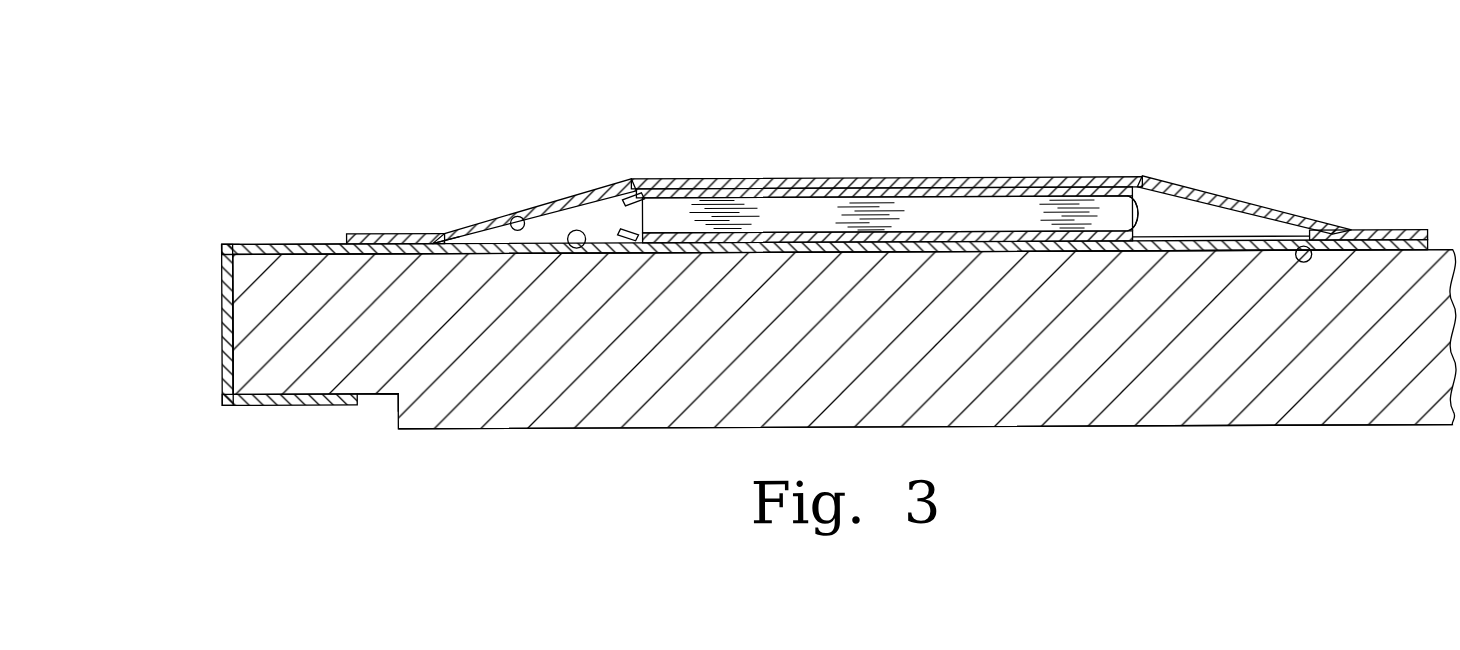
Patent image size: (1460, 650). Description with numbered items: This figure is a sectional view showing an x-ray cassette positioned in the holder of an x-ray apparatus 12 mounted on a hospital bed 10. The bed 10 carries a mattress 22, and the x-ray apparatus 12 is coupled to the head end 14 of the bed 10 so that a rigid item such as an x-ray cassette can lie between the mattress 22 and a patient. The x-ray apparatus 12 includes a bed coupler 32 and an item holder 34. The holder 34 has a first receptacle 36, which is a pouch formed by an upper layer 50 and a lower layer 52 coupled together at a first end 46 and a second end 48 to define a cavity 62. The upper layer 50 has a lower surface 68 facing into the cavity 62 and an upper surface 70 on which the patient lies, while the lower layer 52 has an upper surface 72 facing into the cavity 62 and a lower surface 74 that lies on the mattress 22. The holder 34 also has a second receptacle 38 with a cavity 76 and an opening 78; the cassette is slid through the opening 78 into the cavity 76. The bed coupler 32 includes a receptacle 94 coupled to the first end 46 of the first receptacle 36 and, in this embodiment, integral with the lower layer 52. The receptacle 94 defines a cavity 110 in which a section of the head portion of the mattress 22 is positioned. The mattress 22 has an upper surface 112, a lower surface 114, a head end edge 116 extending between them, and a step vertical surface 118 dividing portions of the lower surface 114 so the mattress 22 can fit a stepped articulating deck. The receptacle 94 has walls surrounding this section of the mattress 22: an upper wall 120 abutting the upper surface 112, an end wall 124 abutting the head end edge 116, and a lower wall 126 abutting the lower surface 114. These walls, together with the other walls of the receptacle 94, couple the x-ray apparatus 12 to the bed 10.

The hospital bed 10 is at (1148, 485).
The x-ray apparatus 12 is at (1063, 117).
The head end 14 is at (250, 306).
The mattress 22 is at (650, 429).
The bed coupler 32 is at (262, 241).
The item holder 34 is at (727, 165).
The first receptacle 36 is at (1157, 177).
The second receptacle 38 is at (1147, 214).
The first end 46 is at (360, 231).
The second end 48 is at (1408, 231).
The upper layer 50 is at (580, 196).
The lower layer 52 is at (456, 240).
The cavity 62 is at (1243, 232).
The lower surface 68 is at (518, 214).
The upper surface 70 is at (906, 177).
The upper surface 72 is at (578, 250).
The lower surface 74 is at (1306, 248).
The cavity 76 is at (781, 222).
The opening 78 is at (648, 214).
The receptacle 94 is at (243, 241).
The cavity 110 is at (331, 345).
The upper surface 112 is at (303, 252).
The lower surface 114 is at (367, 394).
The head end edge 116 is at (231, 333).
The step vertical surface 118 is at (392, 390).
The upper wall 120 is at (291, 241).
The end wall 124 is at (222, 372).
The lower wall 126 is at (303, 404).